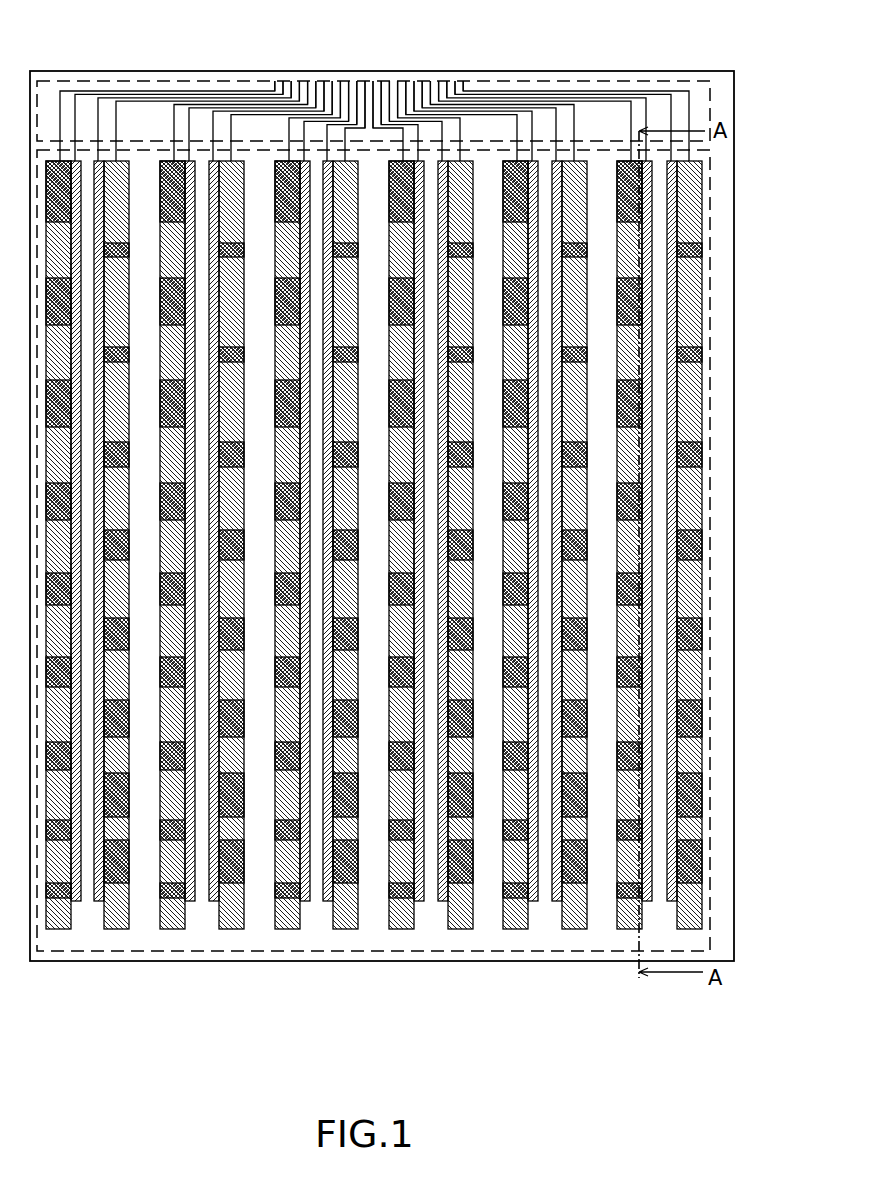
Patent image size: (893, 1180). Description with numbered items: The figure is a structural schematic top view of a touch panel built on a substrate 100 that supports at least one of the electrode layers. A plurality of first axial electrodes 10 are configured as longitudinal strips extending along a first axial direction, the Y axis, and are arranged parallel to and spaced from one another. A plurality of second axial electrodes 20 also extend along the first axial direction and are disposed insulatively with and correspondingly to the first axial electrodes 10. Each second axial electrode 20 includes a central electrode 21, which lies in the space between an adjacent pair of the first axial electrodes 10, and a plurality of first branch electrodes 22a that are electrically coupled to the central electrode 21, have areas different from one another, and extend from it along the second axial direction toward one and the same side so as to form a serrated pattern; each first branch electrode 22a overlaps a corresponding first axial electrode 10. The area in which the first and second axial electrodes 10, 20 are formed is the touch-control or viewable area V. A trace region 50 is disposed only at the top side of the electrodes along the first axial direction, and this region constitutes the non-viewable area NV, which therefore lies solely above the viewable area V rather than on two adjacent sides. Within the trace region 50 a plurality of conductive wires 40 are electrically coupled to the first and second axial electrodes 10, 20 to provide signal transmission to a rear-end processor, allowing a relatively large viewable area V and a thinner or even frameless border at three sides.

The substrate 100 is at (603, 72).
The non-viewable area NV is at (712, 108).
The viewable area V is at (713, 213).
The conductive wires 40 is at (72, 90).
The trace region 50 is at (399, 81).
The first axial electrodes 10 is at (374, 609).
The second axial electrodes 20 is at (374, 609).
The central electrode 21 is at (303, 900).
The first branch electrodes 22a is at (273, 900).